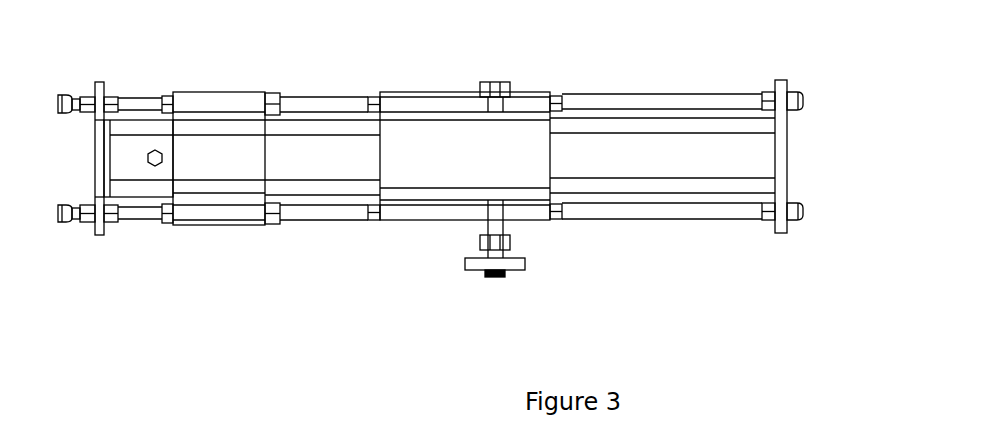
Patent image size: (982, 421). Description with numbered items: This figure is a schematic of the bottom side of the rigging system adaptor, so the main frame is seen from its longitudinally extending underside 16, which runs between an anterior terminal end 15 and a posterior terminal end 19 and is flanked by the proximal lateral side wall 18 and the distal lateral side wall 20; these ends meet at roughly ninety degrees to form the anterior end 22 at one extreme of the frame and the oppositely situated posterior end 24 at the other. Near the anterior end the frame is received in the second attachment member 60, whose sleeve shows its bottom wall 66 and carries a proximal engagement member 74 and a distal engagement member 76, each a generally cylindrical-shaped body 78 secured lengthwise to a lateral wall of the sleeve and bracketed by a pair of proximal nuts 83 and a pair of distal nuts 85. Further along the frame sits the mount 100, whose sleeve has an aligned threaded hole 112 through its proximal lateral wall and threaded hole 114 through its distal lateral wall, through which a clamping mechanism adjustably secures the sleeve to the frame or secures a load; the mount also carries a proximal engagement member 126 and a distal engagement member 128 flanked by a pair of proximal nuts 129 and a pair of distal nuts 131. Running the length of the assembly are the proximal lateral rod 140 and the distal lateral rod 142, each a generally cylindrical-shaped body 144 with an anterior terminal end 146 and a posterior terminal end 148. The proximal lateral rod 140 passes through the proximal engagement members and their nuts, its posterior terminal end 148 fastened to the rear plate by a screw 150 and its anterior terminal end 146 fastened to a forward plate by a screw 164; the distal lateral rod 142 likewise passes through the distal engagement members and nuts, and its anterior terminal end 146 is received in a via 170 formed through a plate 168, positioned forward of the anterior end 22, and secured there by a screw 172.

The mount 100 is at (471, 29).
The anterior end 22 is at (48, 178).
The anterior terminal end of underside 15 is at (110, 157).
The screw 172 is at (53, 97).
The plate 168 is at (103, 83).
The via 170 is at (107, 92).
The screw 164 is at (100, 238).
The anterior terminal end 146 is at (125, 220).
The pair of distal nuts 85 is at (167, 92).
The pair of proximal nuts 83 is at (162, 225).
The generally cylindrical-shaped body 78 is at (193, 100).
The distal engagement member 76 is at (251, 74).
The second attachment member 60 is at (197, 260).
The bottom wall 66 is at (257, 183).
The proximal engagement member 74 is at (251, 242).
The generally cylindrical-shaped body 144 is at (325, 100).
The proximal engagement member 126 is at (425, 234).
The pair of distal nuts 131 is at (378, 93).
The pair of proximal nuts 129 is at (377, 225).
The distal engagement member 128 is at (437, 79).
The threaded hole 114 is at (497, 110).
The threaded hole 112 is at (505, 198).
The distal lateral side wall 20 is at (632, 125).
The proximal lateral side wall 18 is at (650, 188).
The underside 16 is at (700, 168).
The distal lateral rod 142 is at (710, 98).
The proximal lateral rod 140 is at (722, 220).
The posterior terminal end 148 is at (752, 93).
The posterior end 24 is at (765, 153).
The posterior terminal end of underside 19 is at (770, 177).
The screw 150 is at (801, 237).